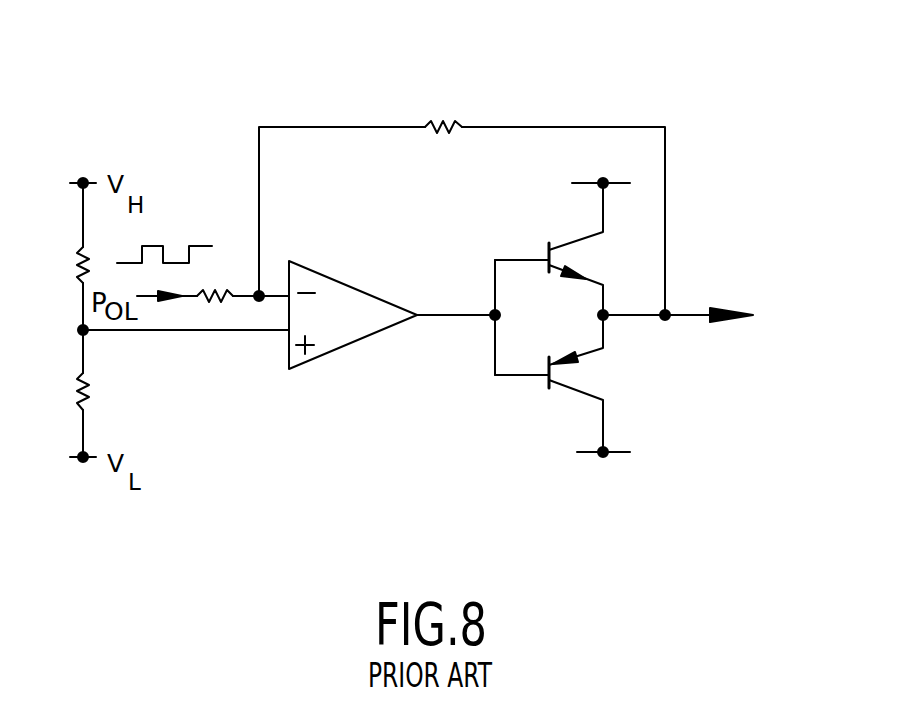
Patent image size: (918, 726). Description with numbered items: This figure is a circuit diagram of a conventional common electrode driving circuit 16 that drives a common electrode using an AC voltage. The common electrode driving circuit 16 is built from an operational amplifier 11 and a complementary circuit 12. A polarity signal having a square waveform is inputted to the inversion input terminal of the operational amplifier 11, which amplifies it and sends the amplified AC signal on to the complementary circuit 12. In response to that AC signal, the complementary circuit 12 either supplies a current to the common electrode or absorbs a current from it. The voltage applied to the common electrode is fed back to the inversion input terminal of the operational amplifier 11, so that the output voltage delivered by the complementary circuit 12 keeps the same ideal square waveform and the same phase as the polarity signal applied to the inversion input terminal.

The operational amplifier 11 is at (350, 345).
The complementary circuit 12 is at (645, 392).
The common electrode driving circuit 16 is at (736, 110).